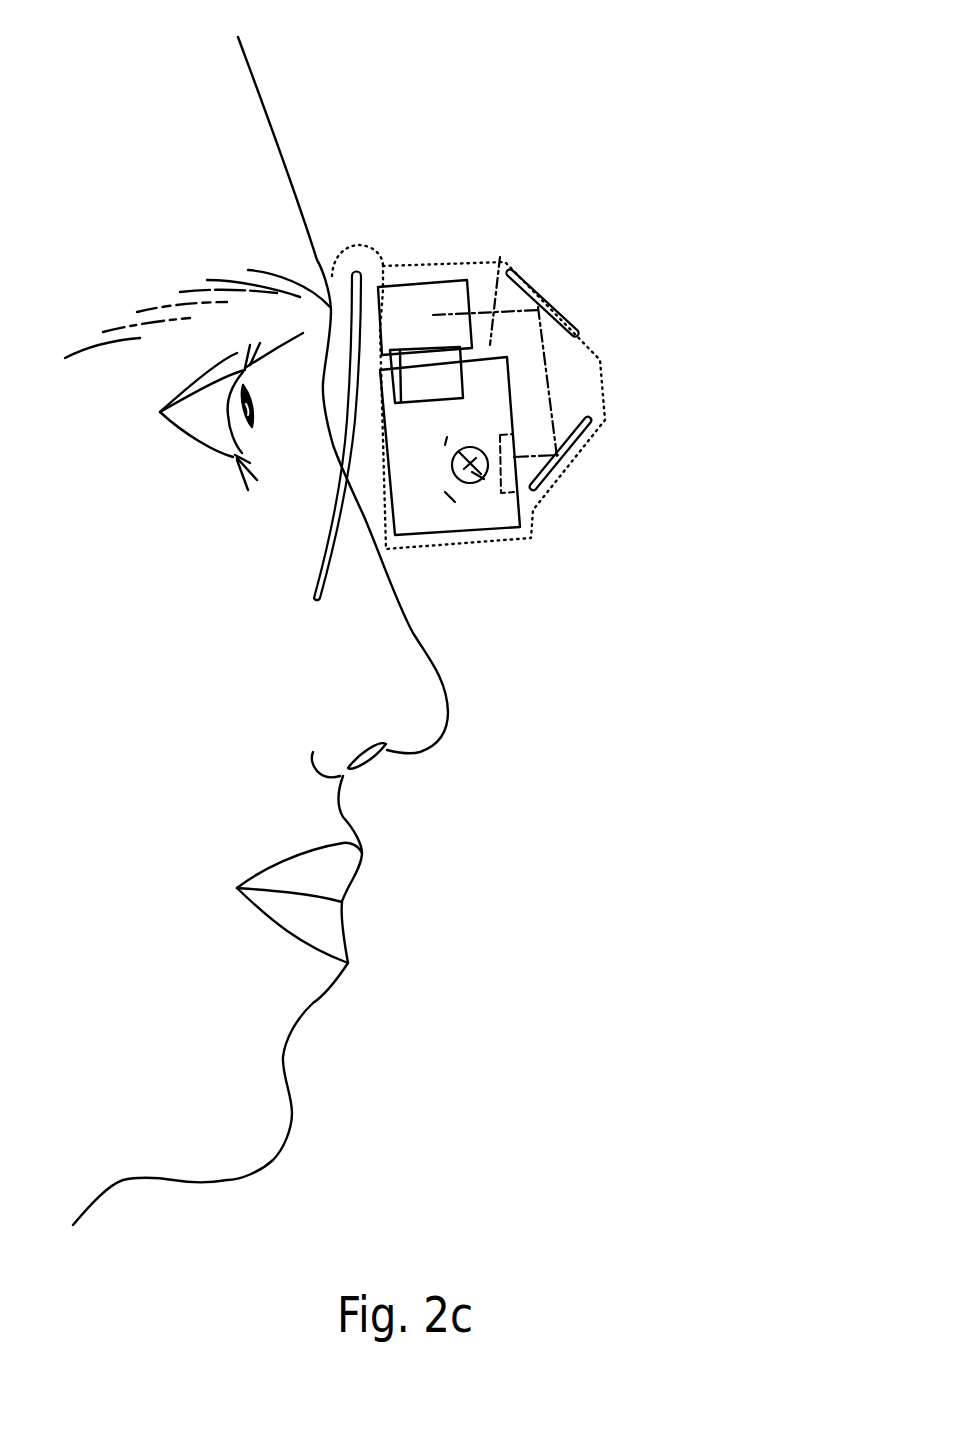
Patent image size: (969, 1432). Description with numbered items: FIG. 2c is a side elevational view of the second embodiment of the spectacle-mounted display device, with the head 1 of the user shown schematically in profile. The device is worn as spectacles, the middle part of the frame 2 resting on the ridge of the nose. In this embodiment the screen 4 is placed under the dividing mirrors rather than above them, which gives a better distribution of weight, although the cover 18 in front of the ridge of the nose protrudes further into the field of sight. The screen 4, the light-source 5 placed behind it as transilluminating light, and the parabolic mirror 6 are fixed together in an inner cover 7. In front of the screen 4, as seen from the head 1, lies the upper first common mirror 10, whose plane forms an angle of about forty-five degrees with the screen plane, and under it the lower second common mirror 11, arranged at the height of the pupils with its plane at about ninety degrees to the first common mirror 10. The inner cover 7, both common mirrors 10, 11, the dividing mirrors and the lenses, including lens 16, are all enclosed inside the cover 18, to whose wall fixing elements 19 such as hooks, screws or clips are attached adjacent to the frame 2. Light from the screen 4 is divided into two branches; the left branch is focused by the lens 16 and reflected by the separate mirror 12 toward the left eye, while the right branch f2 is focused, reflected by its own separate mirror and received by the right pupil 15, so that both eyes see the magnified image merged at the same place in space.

The head 1 is at (257, 97).
The frame 2 is at (328, 552).
The screen 4 is at (513, 527).
The light-source 5 is at (475, 482).
The parabolic mirror 6 is at (445, 445).
The inner cover 7 is at (500, 257).
The first common mirror 10 is at (567, 453).
The second common mirror 11 is at (558, 300).
The left side separate mirror 12 is at (428, 350).
The right pupil 15 is at (253, 433).
The lens 16 is at (397, 257).
The cover 18 is at (600, 363).
The fixing elements 19 is at (347, 253).
The right side light path branch f2 is at (550, 408).